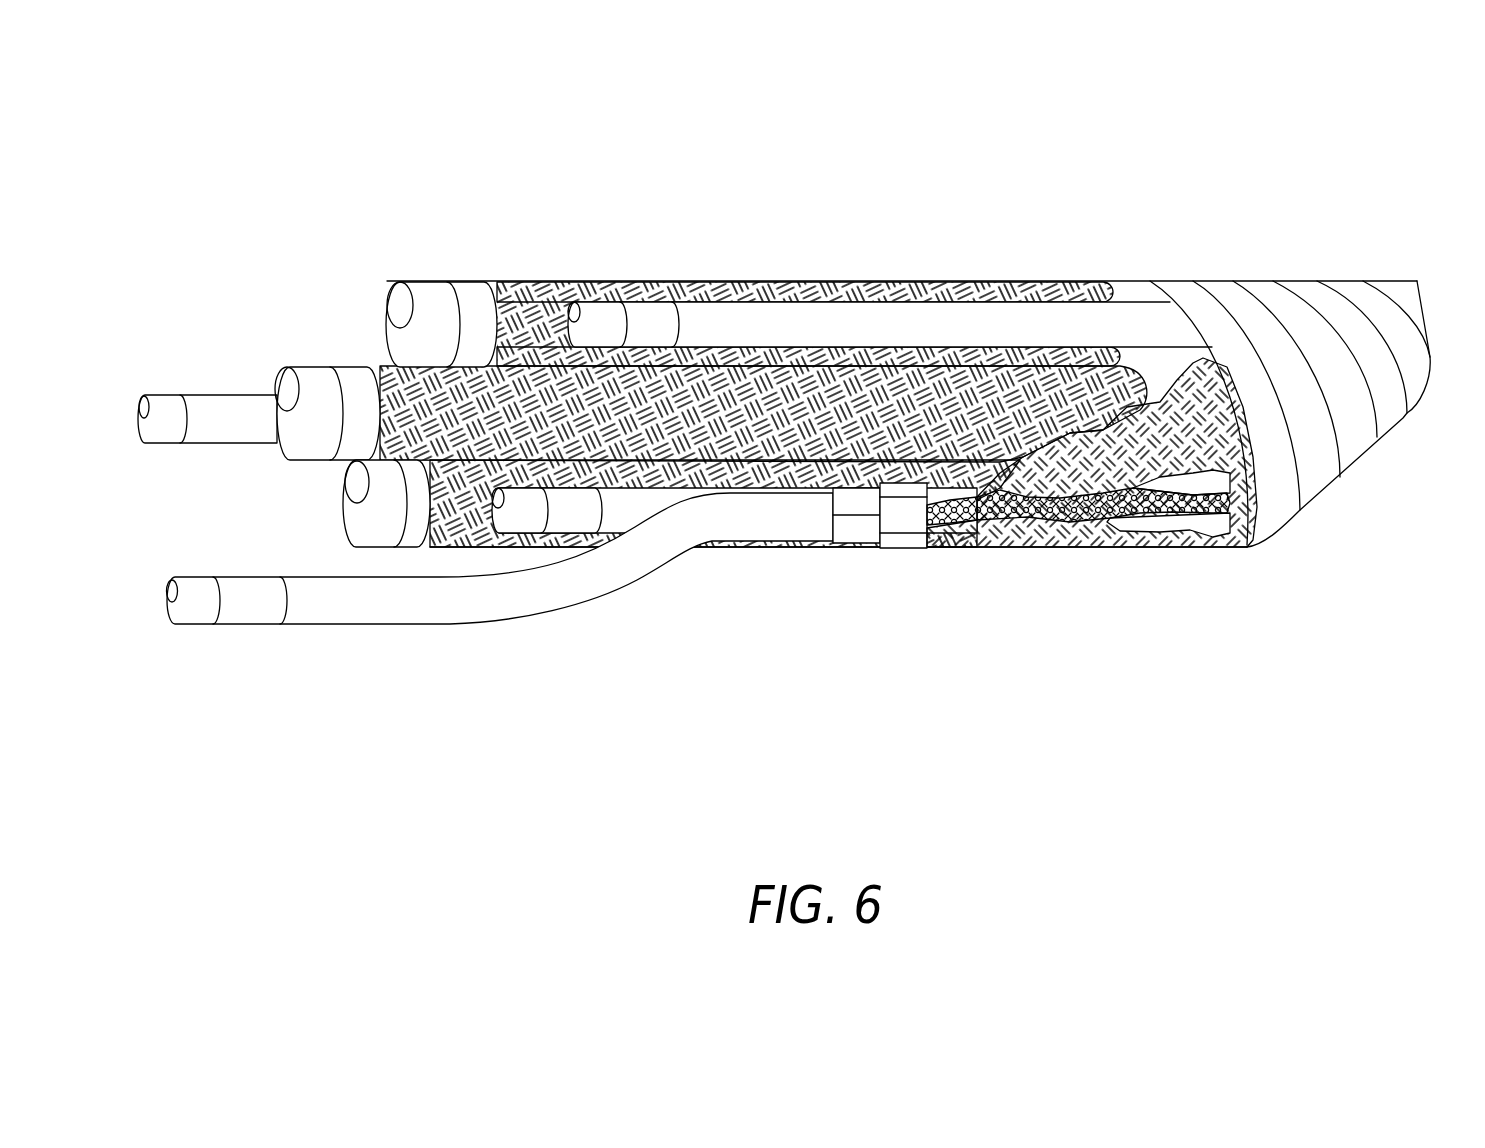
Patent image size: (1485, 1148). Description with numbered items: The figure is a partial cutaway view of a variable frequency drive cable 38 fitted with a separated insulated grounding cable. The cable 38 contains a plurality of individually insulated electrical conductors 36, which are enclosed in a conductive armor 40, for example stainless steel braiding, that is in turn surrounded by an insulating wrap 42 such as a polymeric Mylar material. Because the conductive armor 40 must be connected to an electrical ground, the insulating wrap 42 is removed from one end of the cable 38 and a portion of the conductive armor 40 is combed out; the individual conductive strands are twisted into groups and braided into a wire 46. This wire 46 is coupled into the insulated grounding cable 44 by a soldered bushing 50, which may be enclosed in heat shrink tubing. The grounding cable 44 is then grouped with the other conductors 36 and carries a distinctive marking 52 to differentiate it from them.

The individually insulated electrical conductors 36 is at (613, 302).
The variable frequency drive cable 38 is at (1010, 204).
The conductive armor 40 is at (1193, 403).
The insulating wrap 42 is at (1373, 328).
The insulated grounding cable 44 is at (185, 613).
The wire 46 is at (1115, 530).
The soldered bushing 50 is at (898, 530).
The marking 52 is at (243, 618).